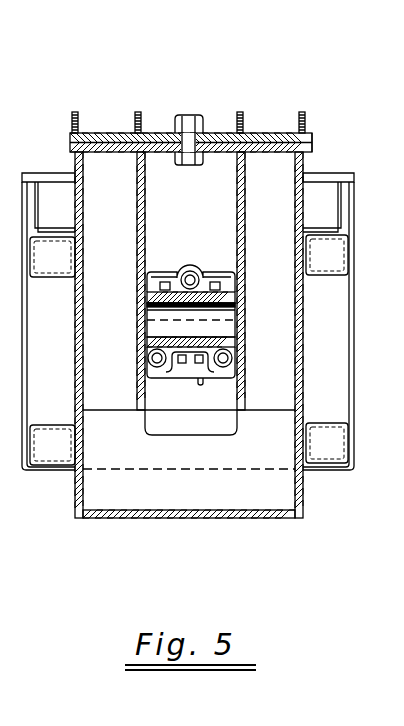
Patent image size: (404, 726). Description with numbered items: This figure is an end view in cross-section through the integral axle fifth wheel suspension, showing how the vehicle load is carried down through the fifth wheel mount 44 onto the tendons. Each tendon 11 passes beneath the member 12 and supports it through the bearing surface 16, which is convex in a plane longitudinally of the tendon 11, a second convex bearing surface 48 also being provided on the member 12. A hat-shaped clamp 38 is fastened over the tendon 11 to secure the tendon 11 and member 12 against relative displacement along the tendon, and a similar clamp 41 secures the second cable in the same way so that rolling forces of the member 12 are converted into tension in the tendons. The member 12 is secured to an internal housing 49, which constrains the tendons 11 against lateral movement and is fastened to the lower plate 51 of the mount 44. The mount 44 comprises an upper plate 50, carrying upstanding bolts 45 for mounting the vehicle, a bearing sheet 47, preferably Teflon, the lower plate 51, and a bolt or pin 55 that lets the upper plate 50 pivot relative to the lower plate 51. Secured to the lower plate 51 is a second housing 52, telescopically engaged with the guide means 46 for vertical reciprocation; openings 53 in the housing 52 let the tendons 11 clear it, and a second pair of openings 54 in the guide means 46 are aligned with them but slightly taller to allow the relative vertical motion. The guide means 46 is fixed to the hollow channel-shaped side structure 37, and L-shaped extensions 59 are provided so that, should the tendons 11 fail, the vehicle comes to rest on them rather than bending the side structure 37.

The tendon 11 is at (143, 360).
The member 12 is at (222, 334).
The bearing surface 16 is at (189, 428).
The side structure 37 is at (50, 425).
The hat-shaped clamp 38 is at (220, 368).
The clamp 41 is at (188, 265).
The fifth wheel mount 44 is at (256, 92).
The bolts 45 is at (120, 122).
The guide means 46 is at (304, 328).
The bearing sheet 47 is at (313, 142).
The second convex bearing surface 48 is at (244, 270).
The internal housing 49 is at (136, 212).
The upper plate 50 is at (264, 133).
The lower plate 51 is at (223, 153).
The second housing 52 is at (303, 208).
The openings 53 is at (200, 385).
The second pair of openings 54 is at (160, 427).
The bolt or pin 55 is at (212, 132).
The L-shaped extensions 59 is at (344, 172).